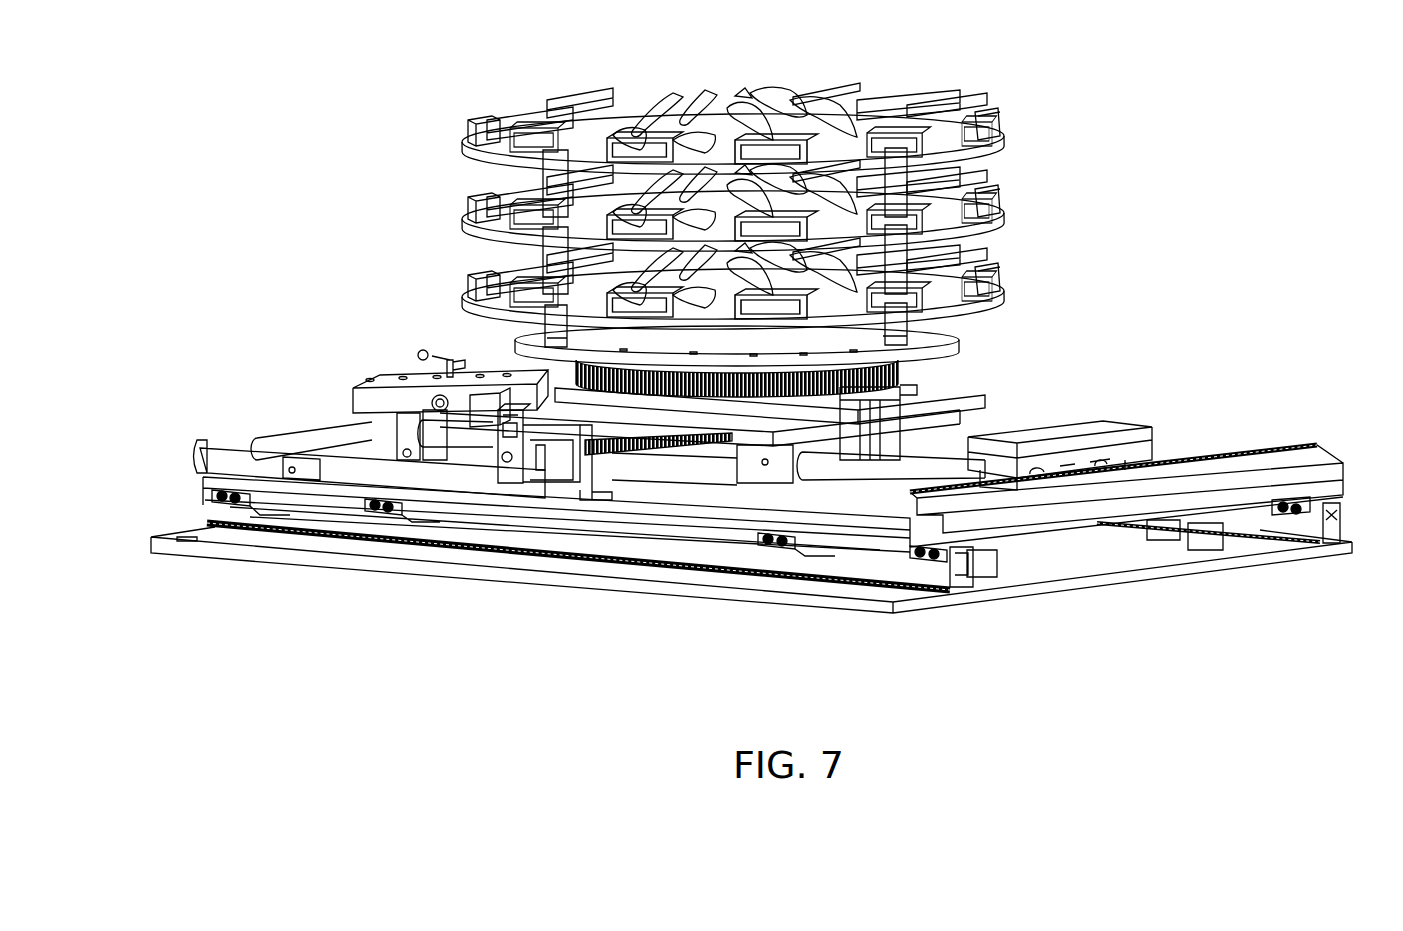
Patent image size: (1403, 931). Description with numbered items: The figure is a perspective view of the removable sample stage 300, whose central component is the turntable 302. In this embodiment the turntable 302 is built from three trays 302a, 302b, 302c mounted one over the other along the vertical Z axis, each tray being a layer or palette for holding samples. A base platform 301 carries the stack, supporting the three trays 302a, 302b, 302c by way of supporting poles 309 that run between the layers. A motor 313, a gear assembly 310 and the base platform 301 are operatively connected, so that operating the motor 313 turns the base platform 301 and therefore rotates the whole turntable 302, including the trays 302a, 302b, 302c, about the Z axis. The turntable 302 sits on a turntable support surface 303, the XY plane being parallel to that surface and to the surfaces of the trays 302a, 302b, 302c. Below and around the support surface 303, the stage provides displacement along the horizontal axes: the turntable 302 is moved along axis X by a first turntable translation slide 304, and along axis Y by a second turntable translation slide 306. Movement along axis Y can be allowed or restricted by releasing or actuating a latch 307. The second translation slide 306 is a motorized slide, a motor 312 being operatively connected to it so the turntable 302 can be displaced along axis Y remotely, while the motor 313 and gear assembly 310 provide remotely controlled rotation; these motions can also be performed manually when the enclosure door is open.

The removable sample stage 300 is at (288, 125).
The base platform 301 is at (930, 343).
The turntable 302 is at (1020, 362).
The tray 302a is at (1000, 148).
The tray 302b is at (1000, 230).
The tray 302c is at (1000, 310).
The turntable support surface 303 is at (458, 480).
The first turntable translation slide 304 is at (937, 449).
The second turntable translation slide 306 is at (283, 447).
The latch 307 is at (432, 352).
The supporting poles 309 is at (553, 200).
The gear assembly 310 is at (692, 382).
The motor 312 is at (563, 457).
The motor 313 is at (890, 433).